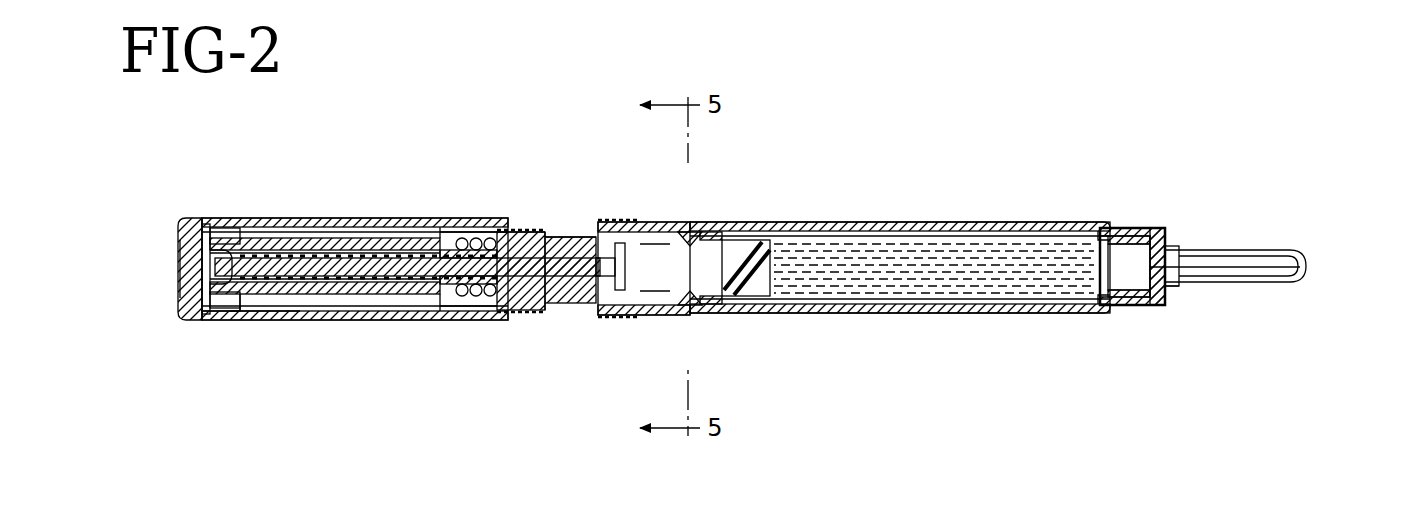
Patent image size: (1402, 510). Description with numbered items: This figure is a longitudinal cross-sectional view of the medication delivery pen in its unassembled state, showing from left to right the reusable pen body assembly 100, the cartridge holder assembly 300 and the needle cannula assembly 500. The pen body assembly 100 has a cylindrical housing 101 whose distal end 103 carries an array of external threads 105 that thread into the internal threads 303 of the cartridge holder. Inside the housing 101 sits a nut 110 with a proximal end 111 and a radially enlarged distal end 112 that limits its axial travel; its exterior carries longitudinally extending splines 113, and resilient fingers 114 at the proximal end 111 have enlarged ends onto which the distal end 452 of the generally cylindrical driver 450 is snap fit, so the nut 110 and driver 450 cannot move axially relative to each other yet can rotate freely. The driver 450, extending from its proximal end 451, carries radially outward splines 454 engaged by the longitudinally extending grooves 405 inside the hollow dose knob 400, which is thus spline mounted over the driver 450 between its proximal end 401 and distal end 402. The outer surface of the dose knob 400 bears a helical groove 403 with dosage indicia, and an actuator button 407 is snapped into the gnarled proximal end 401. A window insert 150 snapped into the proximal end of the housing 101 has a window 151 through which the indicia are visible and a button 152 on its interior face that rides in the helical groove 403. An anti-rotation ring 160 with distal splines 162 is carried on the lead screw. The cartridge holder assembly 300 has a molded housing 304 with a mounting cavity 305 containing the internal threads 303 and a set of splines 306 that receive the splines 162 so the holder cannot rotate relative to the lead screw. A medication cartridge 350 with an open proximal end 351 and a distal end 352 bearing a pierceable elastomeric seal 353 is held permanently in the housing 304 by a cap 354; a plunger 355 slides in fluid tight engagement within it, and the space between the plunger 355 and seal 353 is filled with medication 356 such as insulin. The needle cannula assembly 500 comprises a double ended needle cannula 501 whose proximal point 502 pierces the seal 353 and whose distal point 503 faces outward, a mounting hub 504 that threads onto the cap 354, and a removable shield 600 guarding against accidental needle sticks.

The reusable pen body assembly 100 is at (318, 332).
The cylindrical housing 101 is at (380, 226).
The distal end of housing 103 is at (545, 236).
The external threads 105 is at (512, 230).
The nut 110 is at (520, 312).
The proximal end of nut 111 is at (430, 302).
The distal end of nut 112 is at (572, 305).
The splines 113 is at (487, 240).
The resilient fingers 114 is at (426, 236).
The window insert 150 is at (225, 222).
The window 151 is at (290, 226).
The button 152 is at (308, 226).
The anti-rotation ring 160 is at (568, 240).
The splines of anti-rotation ring 162 is at (604, 250).
The cartridge holder assembly 300 is at (838, 218).
The internal threads 303 is at (612, 316).
The molded housing 304 is at (1100, 228).
The mounting cavity 305 is at (622, 243).
The splines of cartridge holder 306 is at (688, 224).
The medication cartridge 350 is at (935, 222).
The open proximal end of cartridge 351 is at (725, 222).
The distal end of cartridge 352 is at (1150, 235).
The pierceable elastomeric seal 353 is at (1170, 284).
The cap 354 is at (1118, 302).
The plunger 355 is at (762, 298).
The medication 356 is at (973, 272).
The dose knob 400 is at (265, 226).
The proximal end of dose knob 401 is at (200, 222).
The distal end of dose knob 402 is at (452, 302).
The helical groove 403 is at (368, 236).
The longitudinally extending grooves 405 is at (292, 322).
The actuator button 407 is at (178, 262).
The driver 450 is at (320, 240).
The proximal end of driver 451 is at (228, 322).
The distal end of driver 452 is at (470, 306).
The splines of driver 454 is at (256, 322).
The needle cannula assembly 500 is at (1140, 308).
The double ended needle cannula 501 is at (1228, 283).
The proximal point 502 is at (1120, 240).
The distal point 503 is at (1290, 283).
The mounting hub 504 is at (1200, 250).
The shield 600 is at (1300, 257).